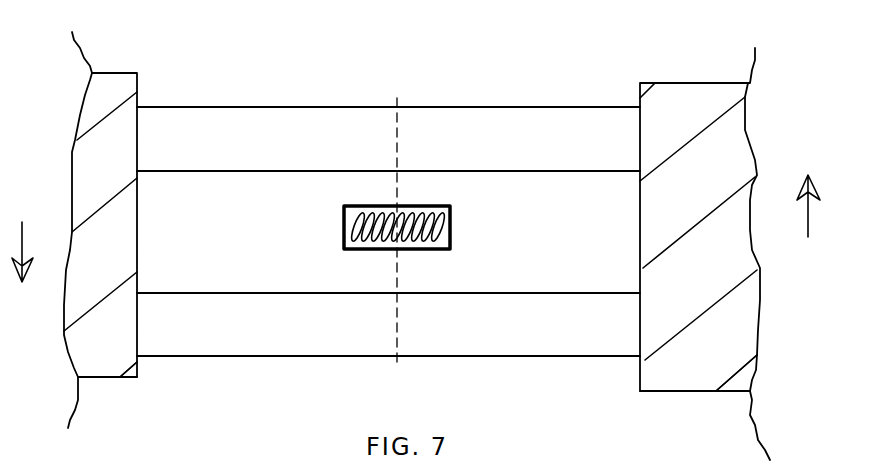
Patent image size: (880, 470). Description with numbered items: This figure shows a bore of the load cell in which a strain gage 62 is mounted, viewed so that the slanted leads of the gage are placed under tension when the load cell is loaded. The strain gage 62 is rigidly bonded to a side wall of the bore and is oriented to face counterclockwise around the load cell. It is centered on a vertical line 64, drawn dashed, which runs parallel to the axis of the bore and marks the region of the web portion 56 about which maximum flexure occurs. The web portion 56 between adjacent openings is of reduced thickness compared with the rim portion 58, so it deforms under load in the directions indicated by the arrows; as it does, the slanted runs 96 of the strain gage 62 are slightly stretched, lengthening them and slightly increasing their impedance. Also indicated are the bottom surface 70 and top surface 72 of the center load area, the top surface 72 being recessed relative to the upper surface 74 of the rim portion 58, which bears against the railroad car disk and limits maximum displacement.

The web portion 56 is at (298, 170).
The rim portion 58 is at (130, 379).
The strain gage 62 is at (452, 226).
The vertical line 64 is at (397, 100).
The bottom surface 70 is at (698, 392).
The top surface 72 is at (703, 83).
The upper surface 74 is at (140, 97).
The slanted runs 96 is at (422, 206).